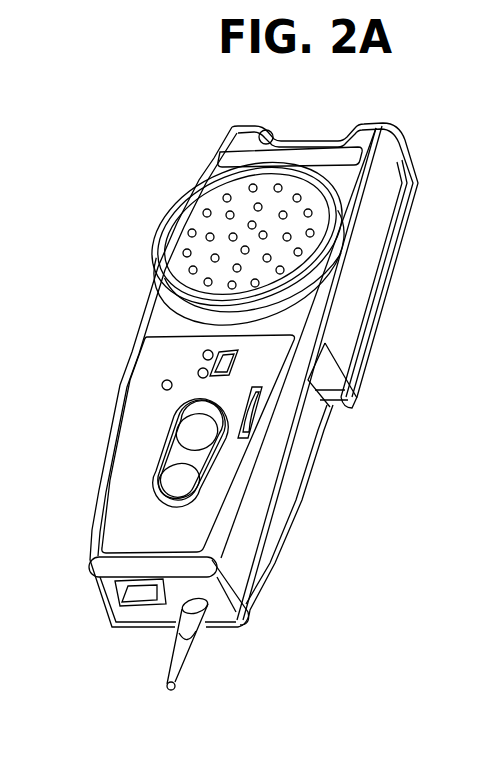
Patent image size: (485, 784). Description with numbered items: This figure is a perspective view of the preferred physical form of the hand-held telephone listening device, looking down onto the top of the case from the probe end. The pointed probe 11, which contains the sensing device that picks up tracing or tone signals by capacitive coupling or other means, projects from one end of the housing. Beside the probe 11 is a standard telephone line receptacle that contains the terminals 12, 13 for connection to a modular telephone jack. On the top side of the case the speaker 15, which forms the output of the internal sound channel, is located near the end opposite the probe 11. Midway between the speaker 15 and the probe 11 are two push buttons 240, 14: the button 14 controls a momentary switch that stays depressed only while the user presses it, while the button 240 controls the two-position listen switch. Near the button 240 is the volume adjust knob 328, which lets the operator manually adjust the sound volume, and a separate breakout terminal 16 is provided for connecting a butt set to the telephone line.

The probe 11 is at (182, 667).
The terminal 12 is at (108, 642).
The terminal 13 is at (140, 592).
The actuating button 14 is at (211, 467).
The speaker 15 is at (195, 219).
The breakout terminal 16 is at (328, 397).
The push button 240 is at (200, 435).
The volume adjust knob 328 is at (257, 410).